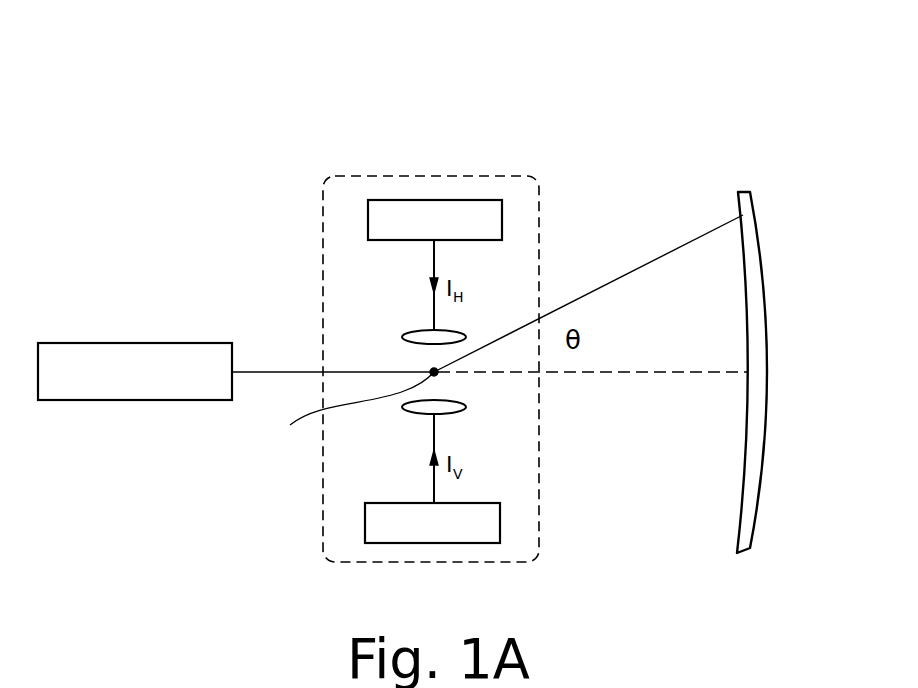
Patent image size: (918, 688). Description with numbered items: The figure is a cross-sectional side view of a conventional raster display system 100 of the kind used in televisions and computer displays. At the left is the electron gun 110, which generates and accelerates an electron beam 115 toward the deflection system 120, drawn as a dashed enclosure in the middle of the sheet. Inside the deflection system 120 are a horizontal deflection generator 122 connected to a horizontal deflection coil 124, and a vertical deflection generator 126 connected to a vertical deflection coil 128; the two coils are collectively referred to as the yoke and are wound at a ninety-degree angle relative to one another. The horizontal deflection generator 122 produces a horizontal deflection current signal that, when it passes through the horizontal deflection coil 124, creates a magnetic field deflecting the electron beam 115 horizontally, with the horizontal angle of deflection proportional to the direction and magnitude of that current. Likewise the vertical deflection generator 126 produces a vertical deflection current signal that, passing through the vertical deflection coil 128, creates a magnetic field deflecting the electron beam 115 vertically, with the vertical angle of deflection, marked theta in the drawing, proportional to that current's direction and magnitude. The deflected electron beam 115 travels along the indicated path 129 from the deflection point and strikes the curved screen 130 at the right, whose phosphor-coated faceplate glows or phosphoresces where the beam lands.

The raster display system 100 is at (655, 119).
The electron gun 110 is at (155, 385).
The electron beam 115 is at (272, 371).
The deflection system 120 is at (462, 176).
The horizontal deflection generator 122 is at (453, 233).
The horizontal deflection coil 124 is at (466, 337).
The vertical deflection generator 126 is at (451, 535).
The vertical deflection coil 128 is at (466, 407).
The deflected beam path 129 is at (340, 407).
The screen 130 is at (766, 272).